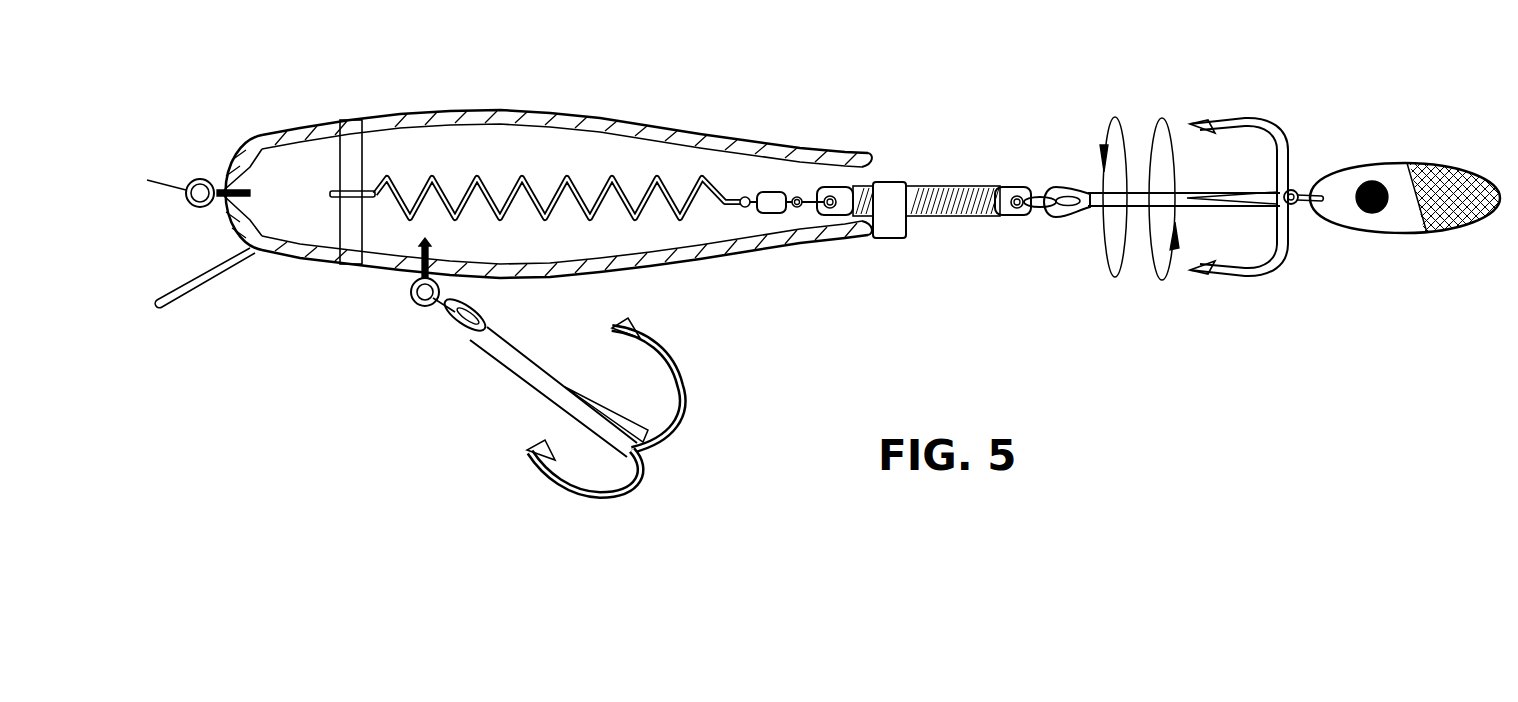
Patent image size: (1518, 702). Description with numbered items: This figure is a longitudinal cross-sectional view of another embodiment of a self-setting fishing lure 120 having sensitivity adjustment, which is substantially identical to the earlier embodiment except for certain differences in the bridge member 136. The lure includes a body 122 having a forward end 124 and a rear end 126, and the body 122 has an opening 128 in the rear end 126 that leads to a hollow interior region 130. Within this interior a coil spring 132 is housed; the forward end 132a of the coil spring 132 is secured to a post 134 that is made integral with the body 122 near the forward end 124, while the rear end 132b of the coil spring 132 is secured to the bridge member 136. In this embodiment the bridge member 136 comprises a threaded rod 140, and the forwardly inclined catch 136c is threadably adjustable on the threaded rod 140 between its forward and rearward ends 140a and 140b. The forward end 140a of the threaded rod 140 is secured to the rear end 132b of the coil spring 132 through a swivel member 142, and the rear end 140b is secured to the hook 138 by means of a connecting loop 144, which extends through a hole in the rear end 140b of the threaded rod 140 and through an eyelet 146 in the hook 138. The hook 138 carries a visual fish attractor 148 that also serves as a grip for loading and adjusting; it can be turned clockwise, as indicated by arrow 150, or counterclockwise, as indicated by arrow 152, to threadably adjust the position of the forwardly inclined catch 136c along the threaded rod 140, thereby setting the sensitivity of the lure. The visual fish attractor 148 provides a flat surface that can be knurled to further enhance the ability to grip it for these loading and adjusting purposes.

The self-setting fishing lure 120 is at (577, 96).
The body 122 is at (490, 116).
The forward end 124 is at (238, 152).
The rear end 126 is at (847, 150).
The opening 128 is at (858, 173).
The hollow interior region 130 is at (690, 152).
The coil spring 132 is at (535, 188).
The forward end of coil spring 132a is at (350, 198).
The rear end of coil spring 132b is at (735, 205).
The post 134 is at (353, 177).
The bridge member 136 is at (929, 190).
The forwardly inclined catch 136c is at (890, 240).
The hook 138 is at (1207, 112).
The threaded rod 140 is at (972, 185).
The forward end of threaded rod 140a is at (830, 186).
The rear end of threaded rod 140b is at (1017, 217).
The swivel member 142 is at (771, 214).
The connecting loop 144 is at (1040, 196).
The eyelet 146 is at (1072, 205).
The visual fish attractor 148 is at (1383, 162).
The arrow 150 is at (1113, 277).
The arrow 152 is at (1162, 117).